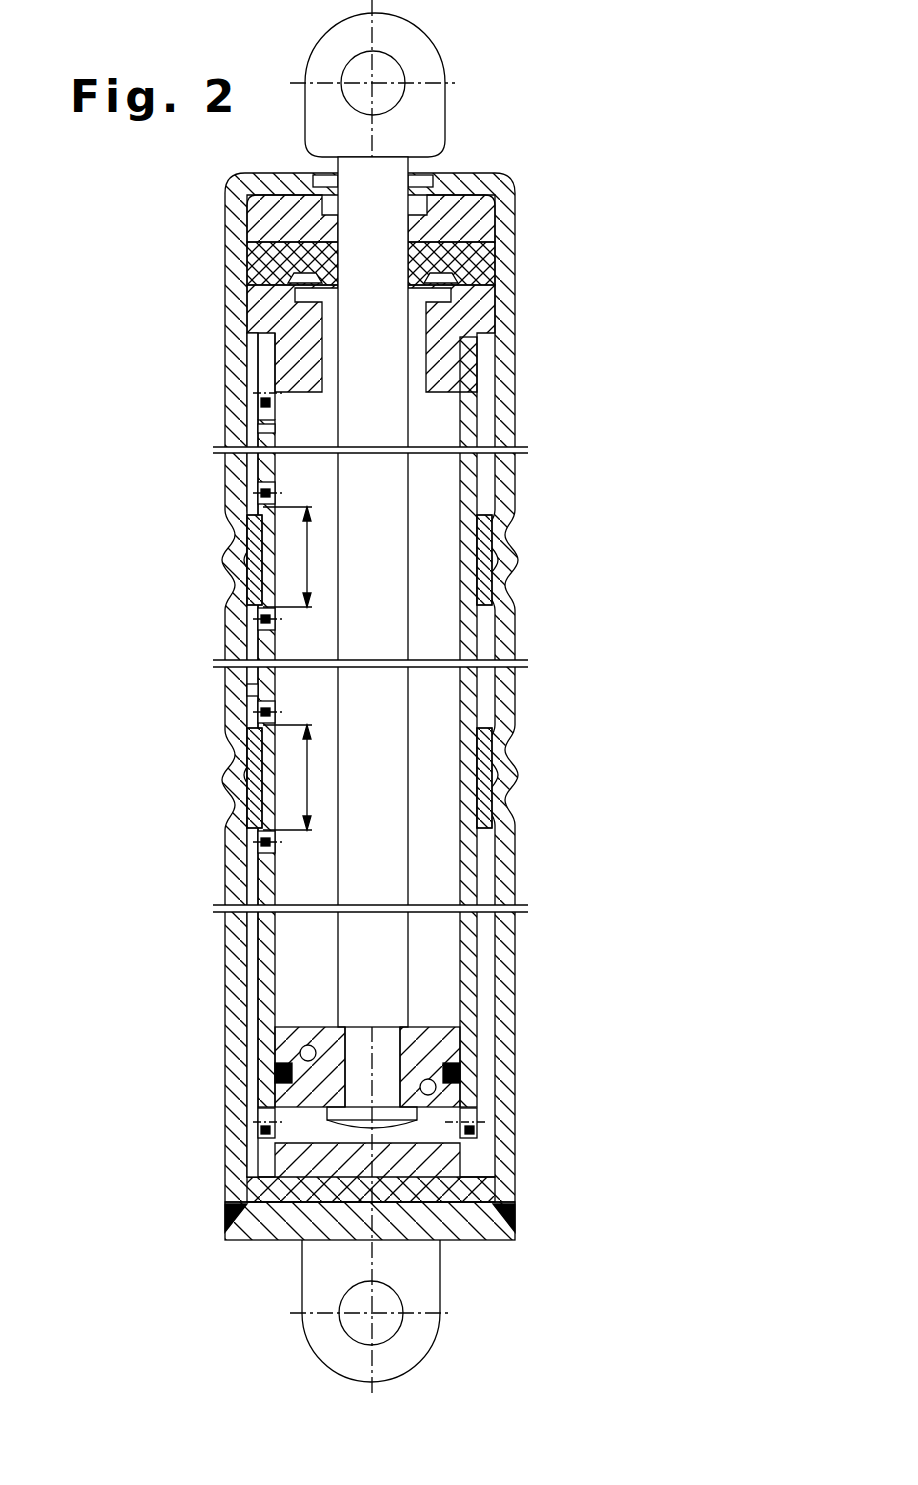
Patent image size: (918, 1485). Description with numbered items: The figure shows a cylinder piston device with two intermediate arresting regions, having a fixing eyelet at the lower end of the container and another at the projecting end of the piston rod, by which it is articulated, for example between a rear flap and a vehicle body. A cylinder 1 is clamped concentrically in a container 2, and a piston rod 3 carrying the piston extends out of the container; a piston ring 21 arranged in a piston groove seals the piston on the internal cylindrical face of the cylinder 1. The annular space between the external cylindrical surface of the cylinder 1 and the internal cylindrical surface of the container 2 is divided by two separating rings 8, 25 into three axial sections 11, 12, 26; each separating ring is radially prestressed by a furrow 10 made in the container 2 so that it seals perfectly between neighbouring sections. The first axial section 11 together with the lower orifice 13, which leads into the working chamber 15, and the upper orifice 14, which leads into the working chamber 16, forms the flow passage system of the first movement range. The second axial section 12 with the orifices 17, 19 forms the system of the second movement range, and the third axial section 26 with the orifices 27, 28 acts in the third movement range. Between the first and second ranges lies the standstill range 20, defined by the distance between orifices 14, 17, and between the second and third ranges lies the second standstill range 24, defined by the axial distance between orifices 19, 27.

The cylinder 1 is at (472, 997).
The container 2 is at (503, 893).
The piston rod 3 is at (395, 645).
The separating ring 8 is at (250, 773).
The furrow 10 is at (487, 813).
The first axial section 11 is at (252, 947).
The second axial section 12 is at (248, 690).
The lower radially extending orifice 13 is at (266, 1132).
The upper radially extending orifice 14 is at (252, 842).
The working chamber 15 is at (477, 1110).
The working chamber 16 is at (447, 718).
The radially extending orifice 17 is at (252, 712).
The radially extending orifice 19 is at (253, 619).
The standstill range 20 is at (310, 781).
The piston ring 21 is at (280, 1070).
The second standstill range 24 is at (310, 560).
The separating ring 25 is at (227, 557).
The third axial section 26 is at (250, 430).
The orifice 27 is at (255, 492).
The orifice 28 is at (262, 402).